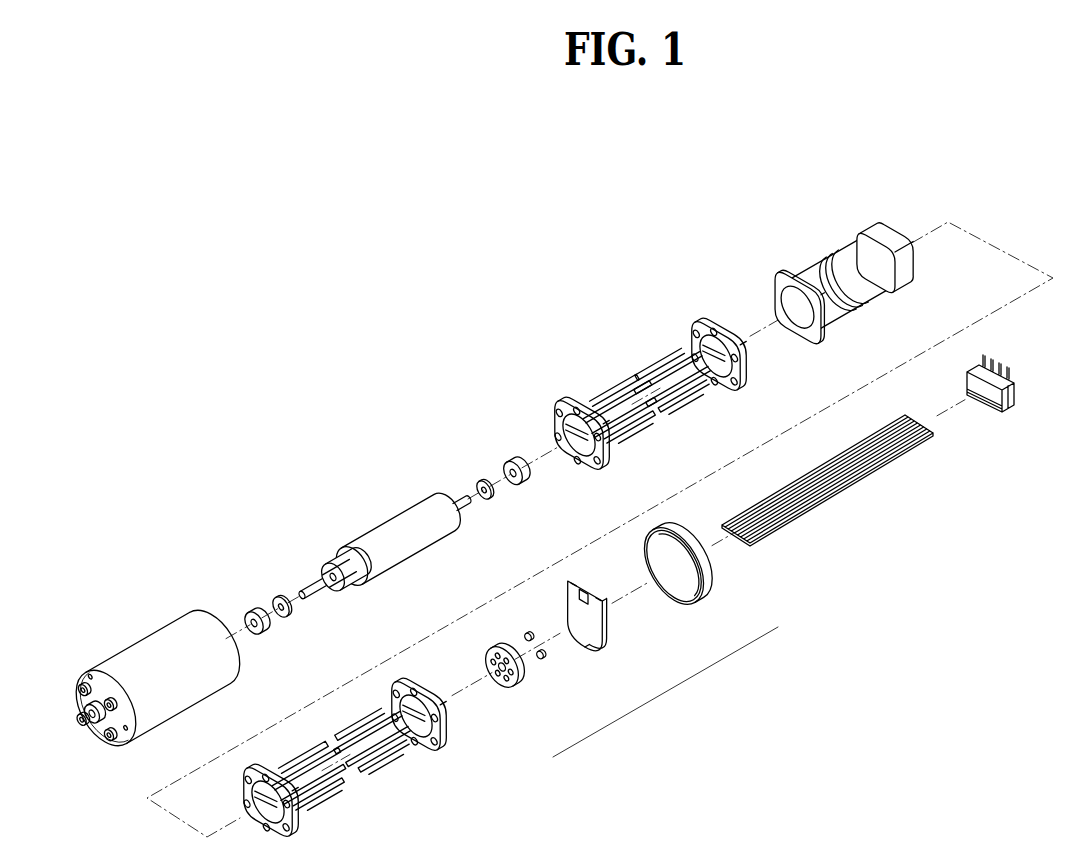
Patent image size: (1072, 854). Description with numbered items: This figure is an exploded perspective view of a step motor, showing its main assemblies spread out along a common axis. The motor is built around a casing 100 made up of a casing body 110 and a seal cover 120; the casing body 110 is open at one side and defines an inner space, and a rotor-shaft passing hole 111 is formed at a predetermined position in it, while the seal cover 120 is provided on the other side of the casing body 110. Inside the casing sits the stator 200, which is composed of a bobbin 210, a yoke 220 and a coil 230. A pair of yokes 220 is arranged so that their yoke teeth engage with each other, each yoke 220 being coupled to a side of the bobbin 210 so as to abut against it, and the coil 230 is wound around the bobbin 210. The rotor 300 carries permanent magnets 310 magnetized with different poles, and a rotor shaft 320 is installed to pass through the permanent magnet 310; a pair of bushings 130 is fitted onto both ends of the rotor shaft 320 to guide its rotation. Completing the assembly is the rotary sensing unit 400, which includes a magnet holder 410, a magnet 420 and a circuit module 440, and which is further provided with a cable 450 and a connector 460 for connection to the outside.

The casing 100 is at (665, 692).
The casing body 110 is at (227, 658).
The rotor-shaft passing hole 111 is at (93, 733).
The seal cover 120 is at (696, 590).
The bushing 130 is at (258, 612).
The stator 200 is at (871, 308).
The bobbin 210 is at (868, 228).
The yoke 220 is at (557, 423).
The coil 230 is at (820, 270).
The rotor 300 is at (266, 463).
The permanent magnet 310 is at (377, 538).
The rotor shaft 320 is at (310, 575).
The rotary sensing unit 400 is at (907, 454).
The magnet holder 410 is at (518, 683).
The magnet 420 is at (546, 661).
The circuit module 440 is at (594, 638).
The cable 450 is at (827, 495).
The connector 460 is at (1008, 405).